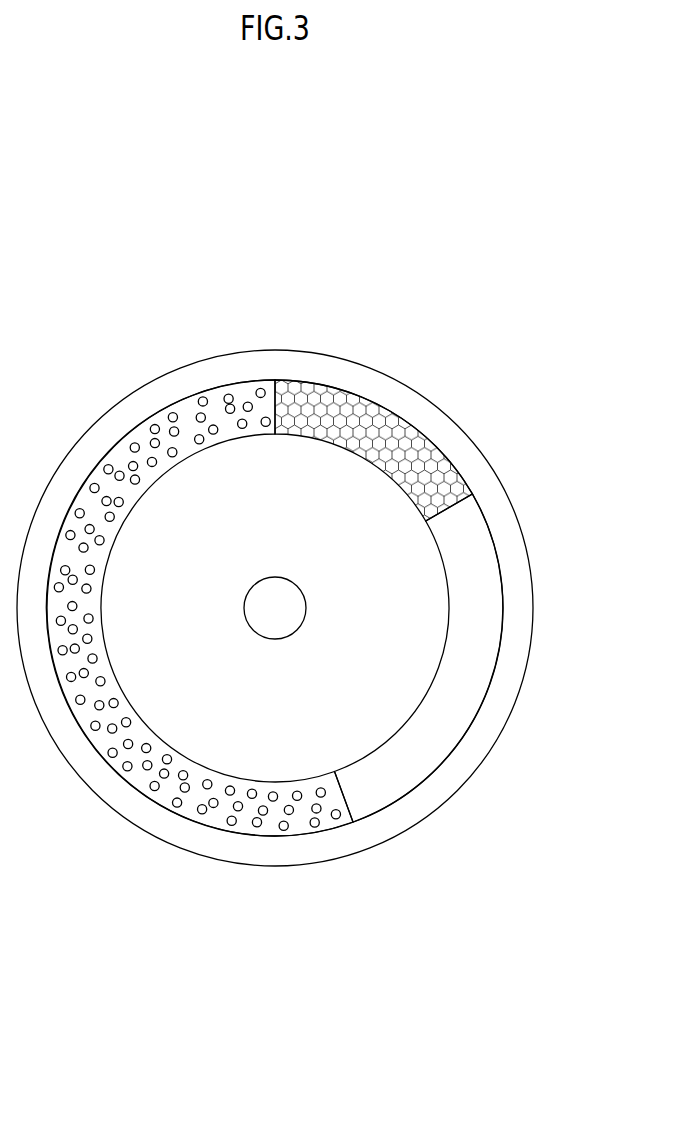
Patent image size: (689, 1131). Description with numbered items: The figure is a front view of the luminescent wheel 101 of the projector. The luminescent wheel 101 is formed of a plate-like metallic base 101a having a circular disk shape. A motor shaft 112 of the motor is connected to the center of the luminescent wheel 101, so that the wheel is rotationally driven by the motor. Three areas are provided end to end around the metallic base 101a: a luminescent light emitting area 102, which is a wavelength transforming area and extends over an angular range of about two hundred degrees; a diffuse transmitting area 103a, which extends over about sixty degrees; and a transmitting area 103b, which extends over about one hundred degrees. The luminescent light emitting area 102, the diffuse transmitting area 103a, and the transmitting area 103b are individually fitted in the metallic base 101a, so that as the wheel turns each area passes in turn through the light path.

The luminescent wheel 101 is at (296, 593).
The metallic base 101a is at (318, 863).
The luminescent light emitting area 102 is at (193, 800).
The diffuse transmitting area 103a is at (440, 470).
The transmitting area 103b is at (430, 732).
The motor shaft 112 is at (273, 607).